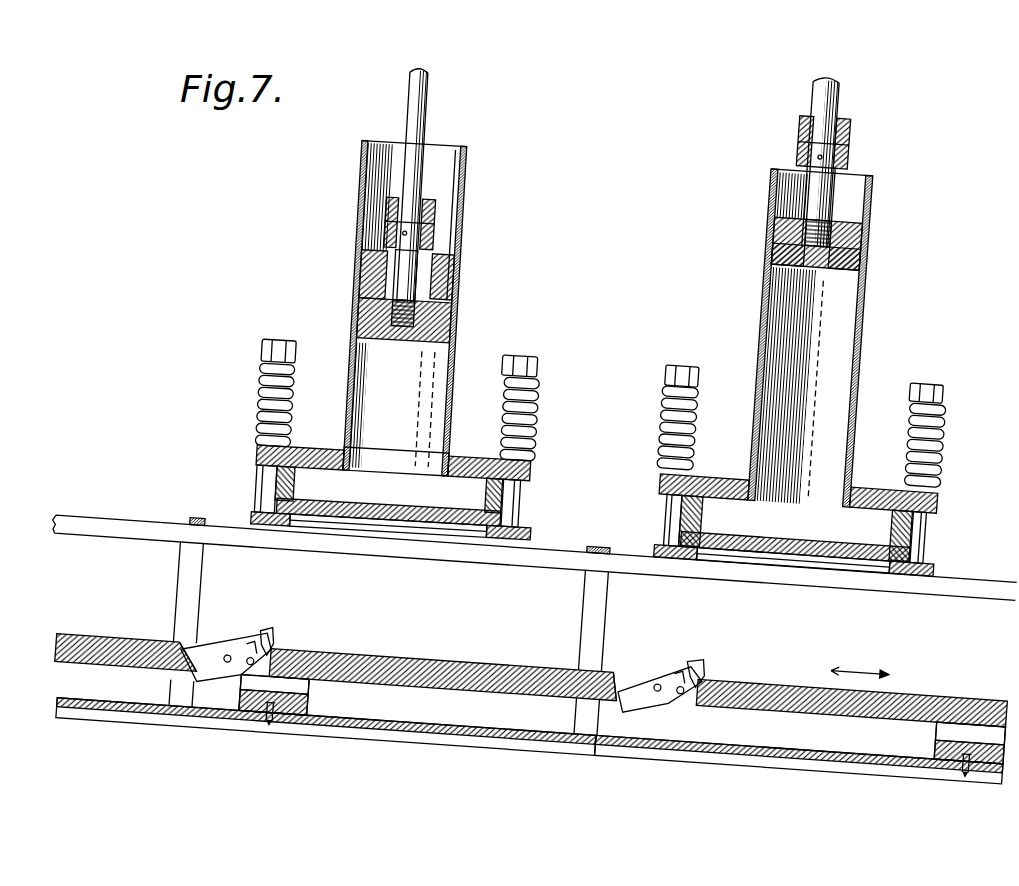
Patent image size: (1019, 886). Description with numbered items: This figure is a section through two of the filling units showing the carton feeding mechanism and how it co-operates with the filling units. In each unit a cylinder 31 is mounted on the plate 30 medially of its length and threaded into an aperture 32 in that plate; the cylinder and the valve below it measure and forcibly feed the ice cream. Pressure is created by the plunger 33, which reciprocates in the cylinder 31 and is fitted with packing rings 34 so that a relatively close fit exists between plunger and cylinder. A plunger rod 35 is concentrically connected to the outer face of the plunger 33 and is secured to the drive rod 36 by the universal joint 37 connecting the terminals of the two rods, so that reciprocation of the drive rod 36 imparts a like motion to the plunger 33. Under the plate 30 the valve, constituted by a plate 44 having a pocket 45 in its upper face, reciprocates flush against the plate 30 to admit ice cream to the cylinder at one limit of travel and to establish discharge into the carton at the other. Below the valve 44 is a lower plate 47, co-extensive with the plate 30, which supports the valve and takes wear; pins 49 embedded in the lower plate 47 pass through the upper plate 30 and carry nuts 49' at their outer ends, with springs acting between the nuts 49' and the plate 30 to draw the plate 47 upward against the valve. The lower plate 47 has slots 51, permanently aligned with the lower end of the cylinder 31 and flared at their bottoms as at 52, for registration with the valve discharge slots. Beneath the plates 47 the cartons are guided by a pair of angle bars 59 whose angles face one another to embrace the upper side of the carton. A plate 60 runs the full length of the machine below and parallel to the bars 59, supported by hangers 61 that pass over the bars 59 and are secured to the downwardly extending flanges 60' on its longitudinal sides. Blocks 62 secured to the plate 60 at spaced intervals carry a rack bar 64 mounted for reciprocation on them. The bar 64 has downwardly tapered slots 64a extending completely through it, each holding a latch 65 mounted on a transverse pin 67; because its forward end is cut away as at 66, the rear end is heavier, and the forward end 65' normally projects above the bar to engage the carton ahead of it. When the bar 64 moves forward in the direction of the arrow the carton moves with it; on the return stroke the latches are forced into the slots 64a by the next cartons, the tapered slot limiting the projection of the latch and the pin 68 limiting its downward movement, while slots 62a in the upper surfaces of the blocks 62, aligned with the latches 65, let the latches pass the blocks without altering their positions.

The plate 30 is at (478, 440).
The cylinder 31 is at (362, 242).
The aperture 32 is at (448, 456).
The plunger 33 is at (448, 322).
The packing rings 34 is at (446, 298).
The plunger rod 35 is at (422, 258).
The drive rod 36 is at (432, 128).
The universal joint 37 is at (440, 218).
The valve plate 44 is at (441, 505).
The pocket 45 is at (432, 522).
The lower plate 47 is at (258, 518).
The pins 49 is at (591, 489).
The nuts 49' is at (616, 351).
The slots 51 is at (318, 500).
The flared bottoms 52 is at (390, 522).
The angle bars 59 is at (56, 517).
The plate 60 is at (326, 756).
The flanges 60' is at (799, 775).
The hangers 61 is at (192, 514).
The blocks 62 is at (255, 714).
The slots 62a is at (310, 692).
The rack bar 64 is at (540, 682).
The tapered slots 64a is at (240, 674).
The latch 65 is at (405, 721).
The forward latch end 65' is at (501, 649).
The cut-away portion 66 is at (266, 640).
The pivot pin 67 is at (227, 655).
The pin 68 is at (250, 657).